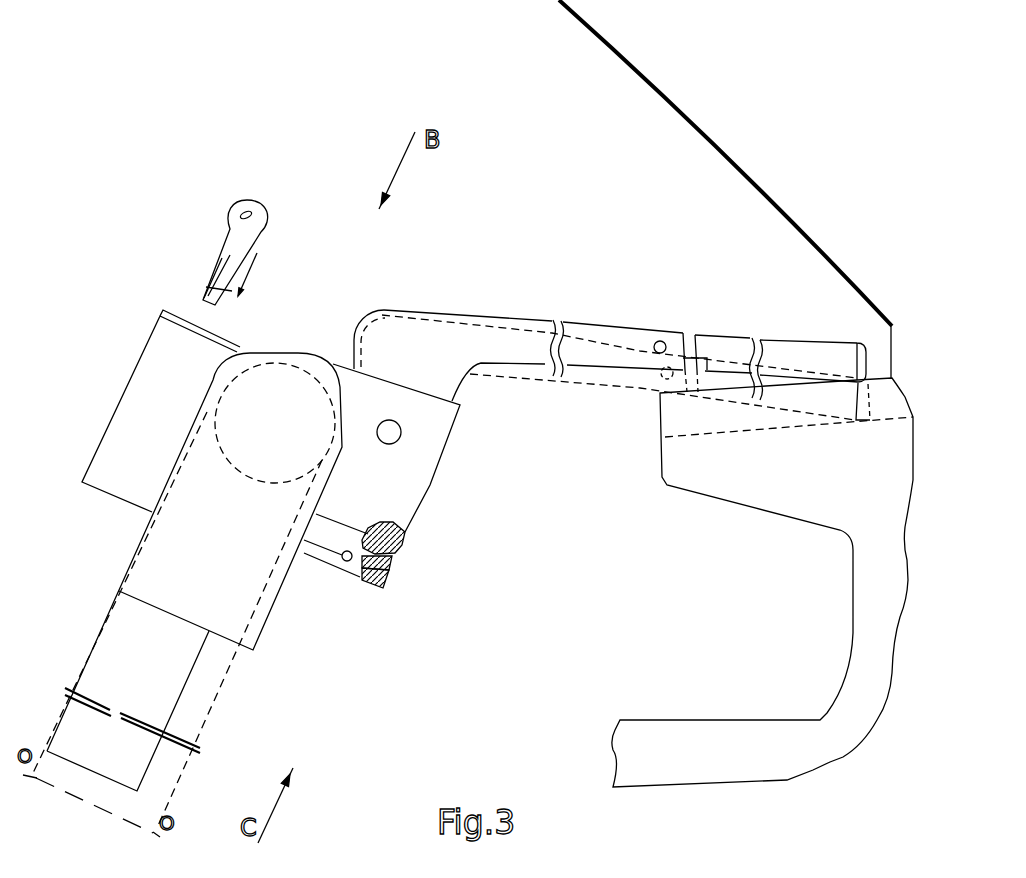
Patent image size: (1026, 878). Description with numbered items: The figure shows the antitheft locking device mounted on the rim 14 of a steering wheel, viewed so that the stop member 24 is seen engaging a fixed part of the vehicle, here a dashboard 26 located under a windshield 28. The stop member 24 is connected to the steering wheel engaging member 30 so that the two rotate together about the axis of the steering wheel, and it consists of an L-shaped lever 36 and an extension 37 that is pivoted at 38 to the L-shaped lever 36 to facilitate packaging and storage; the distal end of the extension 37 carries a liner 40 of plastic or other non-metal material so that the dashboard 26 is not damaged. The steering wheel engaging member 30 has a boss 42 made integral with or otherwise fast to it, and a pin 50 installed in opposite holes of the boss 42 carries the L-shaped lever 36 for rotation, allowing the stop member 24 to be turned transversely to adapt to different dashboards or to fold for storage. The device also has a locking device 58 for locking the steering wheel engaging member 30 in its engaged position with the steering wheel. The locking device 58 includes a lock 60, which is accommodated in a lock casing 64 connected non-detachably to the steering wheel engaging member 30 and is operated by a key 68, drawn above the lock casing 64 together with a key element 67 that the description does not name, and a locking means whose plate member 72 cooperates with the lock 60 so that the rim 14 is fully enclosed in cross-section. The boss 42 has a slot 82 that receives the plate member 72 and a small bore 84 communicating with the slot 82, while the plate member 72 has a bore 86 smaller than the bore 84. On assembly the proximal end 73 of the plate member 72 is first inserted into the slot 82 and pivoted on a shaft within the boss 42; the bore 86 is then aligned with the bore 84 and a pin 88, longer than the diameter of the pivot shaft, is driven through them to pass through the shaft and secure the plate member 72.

The rim 14 is at (267, 362).
The stop member 24 is at (530, 318).
The dashboard 26 is at (662, 478).
The windshield 28 is at (664, 84).
The steering wheel engaging member 30 is at (272, 617).
The L-shaped lever 36 is at (387, 322).
The extension 37 is at (725, 343).
The pivot 38 is at (660, 341).
The liner 40 is at (862, 343).
The boss 42 is at (432, 485).
The pin 50 is at (403, 427).
The locking device 58 is at (308, 548).
The lock 60 is at (100, 437).
The lock casing 64 is at (123, 390).
The key blade 67 is at (203, 297).
The key 68 is at (233, 242).
The plate member 72 is at (320, 536).
The proximal end 73 is at (393, 525).
The slot 82 is at (352, 561).
The small bore 84 is at (398, 556).
The bore 86 is at (380, 580).
The pin 88 is at (390, 568).